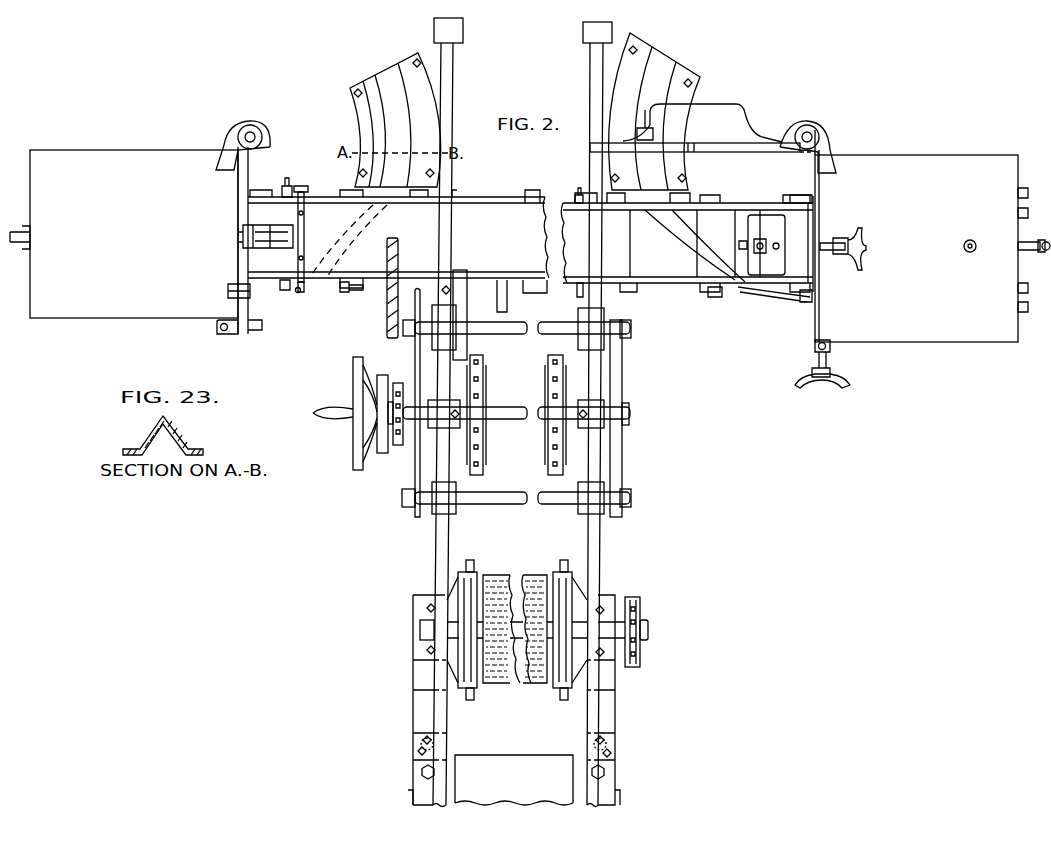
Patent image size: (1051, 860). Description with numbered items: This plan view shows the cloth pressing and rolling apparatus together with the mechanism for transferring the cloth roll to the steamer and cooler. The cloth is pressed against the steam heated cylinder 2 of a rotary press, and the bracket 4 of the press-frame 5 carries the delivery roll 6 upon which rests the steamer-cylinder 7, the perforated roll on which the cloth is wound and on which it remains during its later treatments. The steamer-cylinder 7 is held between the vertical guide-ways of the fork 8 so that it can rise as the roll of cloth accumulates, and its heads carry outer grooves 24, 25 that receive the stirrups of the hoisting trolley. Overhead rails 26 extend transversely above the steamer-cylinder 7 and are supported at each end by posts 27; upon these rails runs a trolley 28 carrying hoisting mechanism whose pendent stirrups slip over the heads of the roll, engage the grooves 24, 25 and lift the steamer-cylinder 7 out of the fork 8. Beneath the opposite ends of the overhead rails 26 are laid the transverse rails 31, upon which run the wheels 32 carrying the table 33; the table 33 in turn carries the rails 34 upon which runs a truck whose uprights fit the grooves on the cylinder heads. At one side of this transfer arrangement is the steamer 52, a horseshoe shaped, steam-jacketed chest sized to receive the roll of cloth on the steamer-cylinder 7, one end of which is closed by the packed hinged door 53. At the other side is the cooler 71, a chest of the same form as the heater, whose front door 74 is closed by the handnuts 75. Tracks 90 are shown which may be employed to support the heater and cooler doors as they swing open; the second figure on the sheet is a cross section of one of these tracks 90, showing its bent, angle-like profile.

In FIG. 2, the cylinder 2 is at (514, 780).
In FIG. 2, the bracket 4 is at (514, 700).
In FIG. 2, the press-frame 5 is at (638, 772).
In FIG. 2, the delivery roll 6 is at (413, 632).
In FIG. 2, the steamer-cylinder 7 is at (513, 597).
In FIG. 2, the fork 8 is at (562, 580).
In FIG. 2, the groove 24 is at (459, 590).
In FIG. 2, the groove 25 is at (572, 690).
In FIG. 2, the overhead rails 26 is at (437, 552).
In FIG. 2, the posts 27 is at (434, 31).
In FIG. 2, the trolley 28 is at (630, 394).
In FIG. 2, the rails 31 is at (723, 208).
In FIG. 2, the wheels 32 is at (291, 193).
In FIG. 2, the table 33 is at (531, 254).
In FIG. 2, the rails 34 is at (477, 203).
In FIG. 2, the steamer 52 is at (916, 259).
In FIG. 2, the hinged door 53 is at (695, 128).
In FIG. 2, the cooler 71 is at (124, 234).
In FIG. 2, the front door 74 is at (243, 172).
In FIG. 2, the handnuts 75 is at (258, 336).
In FIG. 2, the tracks 90 is at (393, 83).
In FIG. 23, the tracks 90 is at (158, 418).